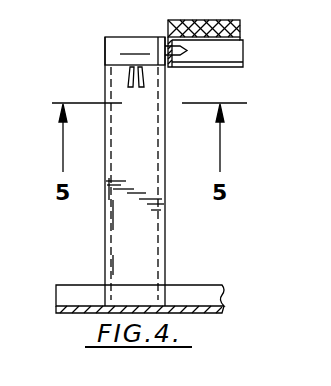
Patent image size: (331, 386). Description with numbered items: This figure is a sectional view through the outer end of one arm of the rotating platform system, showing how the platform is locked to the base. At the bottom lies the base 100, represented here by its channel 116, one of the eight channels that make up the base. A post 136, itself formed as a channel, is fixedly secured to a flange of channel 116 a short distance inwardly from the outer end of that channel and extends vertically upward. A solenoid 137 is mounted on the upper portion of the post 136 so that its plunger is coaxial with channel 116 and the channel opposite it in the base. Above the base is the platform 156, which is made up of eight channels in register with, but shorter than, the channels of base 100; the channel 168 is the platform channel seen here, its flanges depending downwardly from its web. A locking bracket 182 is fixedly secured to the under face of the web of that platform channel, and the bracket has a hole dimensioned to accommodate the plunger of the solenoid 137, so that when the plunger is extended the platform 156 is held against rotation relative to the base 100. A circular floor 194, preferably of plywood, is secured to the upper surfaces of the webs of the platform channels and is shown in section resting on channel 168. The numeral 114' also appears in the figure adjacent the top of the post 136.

The base 100 is at (222, 240).
The slot 114' is at (130, 15).
The channel 116 is at (210, 285).
The post 136 is at (152, 238).
The solenoid 137 is at (117, 44).
The platform 156 is at (248, 72).
The channel 168 is at (237, 52).
The locking bracket 182 is at (178, 70).
The circular floor 194 is at (240, 28).